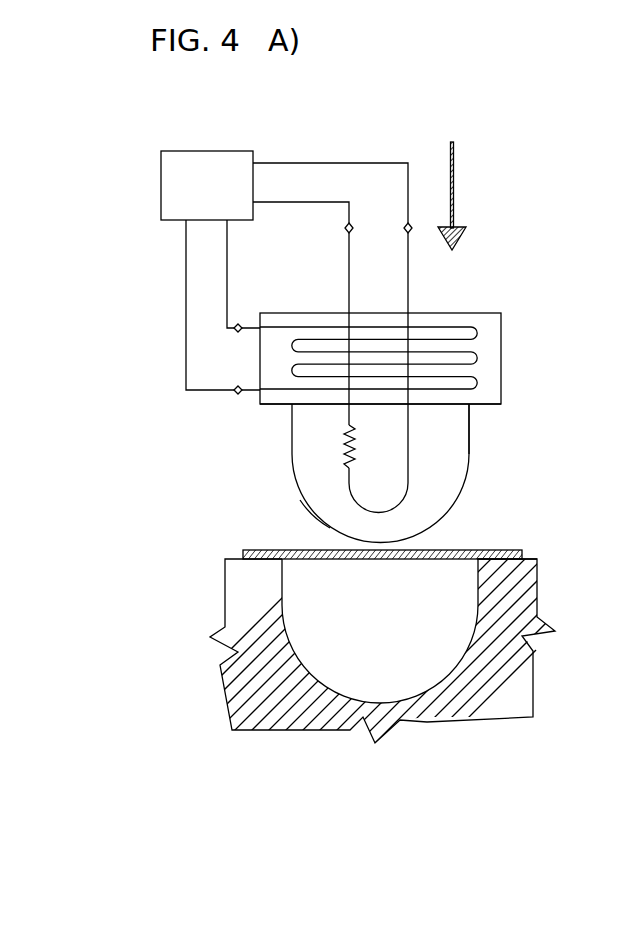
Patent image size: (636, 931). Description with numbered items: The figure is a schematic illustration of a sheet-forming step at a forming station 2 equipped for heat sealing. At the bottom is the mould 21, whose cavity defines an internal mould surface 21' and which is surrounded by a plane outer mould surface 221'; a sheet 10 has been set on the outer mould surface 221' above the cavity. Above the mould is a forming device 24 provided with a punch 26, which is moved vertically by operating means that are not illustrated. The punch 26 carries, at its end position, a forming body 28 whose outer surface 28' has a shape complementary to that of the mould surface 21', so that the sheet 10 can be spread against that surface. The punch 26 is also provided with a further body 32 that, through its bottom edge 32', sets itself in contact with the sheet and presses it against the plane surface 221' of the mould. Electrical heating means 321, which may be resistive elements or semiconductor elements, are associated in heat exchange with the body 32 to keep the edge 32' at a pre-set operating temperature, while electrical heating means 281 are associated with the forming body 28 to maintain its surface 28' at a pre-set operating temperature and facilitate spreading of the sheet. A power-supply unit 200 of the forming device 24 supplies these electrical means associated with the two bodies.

The forming station 2 is at (200, 432).
The power-supply unit 200 is at (161, 180).
The further body 32 is at (406, 241).
The punch 26 is at (502, 387).
The electrical heating means 321 is at (482, 357).
The bottom edge 32' is at (424, 415).
The forming body 28 is at (344, 473).
The outer surface 28' is at (284, 507).
The forming device 24 is at (497, 442).
The electrical heating means 281 is at (408, 496).
The sheet 10 is at (262, 549).
The outer mould surface 221' is at (556, 547).
The mould 21 is at (368, 660).
The internal mould surface 21' is at (380, 675).